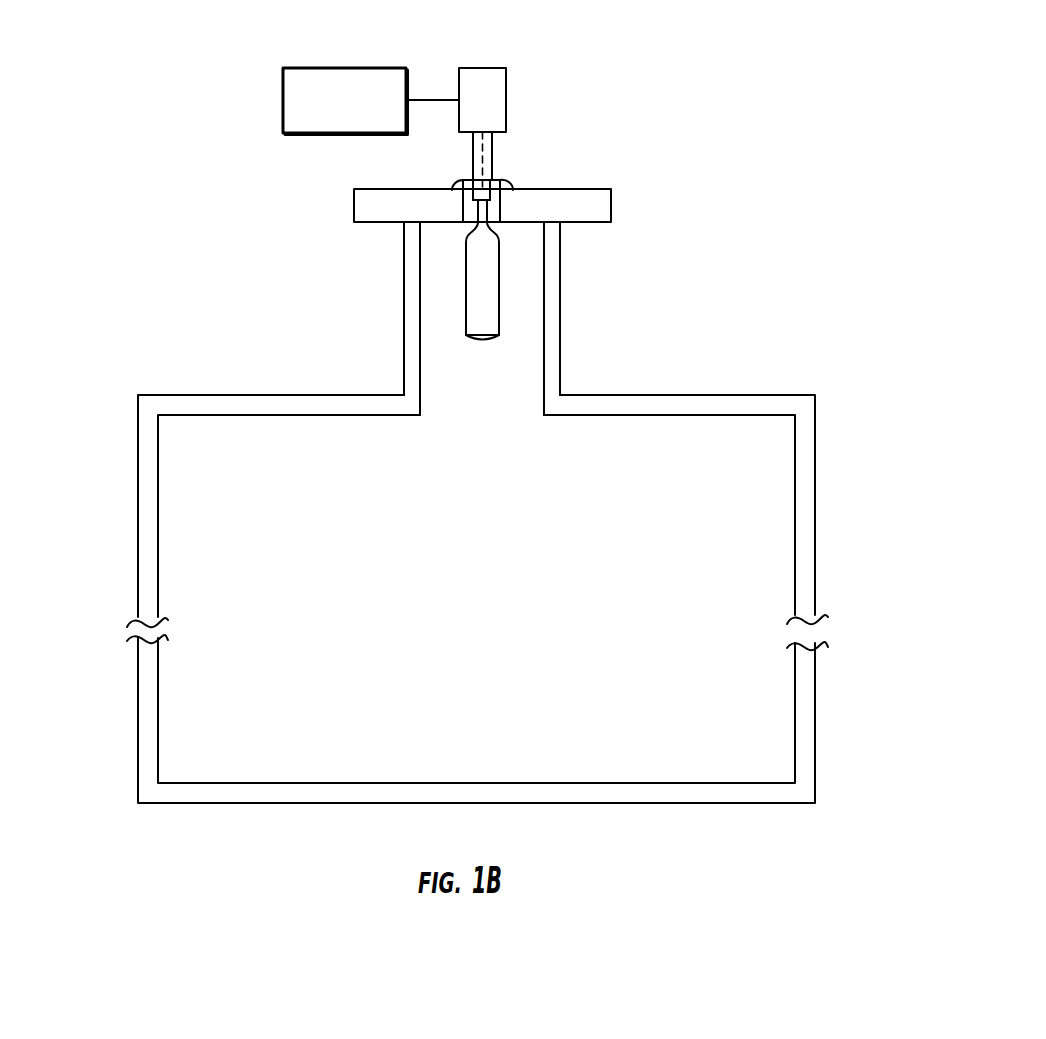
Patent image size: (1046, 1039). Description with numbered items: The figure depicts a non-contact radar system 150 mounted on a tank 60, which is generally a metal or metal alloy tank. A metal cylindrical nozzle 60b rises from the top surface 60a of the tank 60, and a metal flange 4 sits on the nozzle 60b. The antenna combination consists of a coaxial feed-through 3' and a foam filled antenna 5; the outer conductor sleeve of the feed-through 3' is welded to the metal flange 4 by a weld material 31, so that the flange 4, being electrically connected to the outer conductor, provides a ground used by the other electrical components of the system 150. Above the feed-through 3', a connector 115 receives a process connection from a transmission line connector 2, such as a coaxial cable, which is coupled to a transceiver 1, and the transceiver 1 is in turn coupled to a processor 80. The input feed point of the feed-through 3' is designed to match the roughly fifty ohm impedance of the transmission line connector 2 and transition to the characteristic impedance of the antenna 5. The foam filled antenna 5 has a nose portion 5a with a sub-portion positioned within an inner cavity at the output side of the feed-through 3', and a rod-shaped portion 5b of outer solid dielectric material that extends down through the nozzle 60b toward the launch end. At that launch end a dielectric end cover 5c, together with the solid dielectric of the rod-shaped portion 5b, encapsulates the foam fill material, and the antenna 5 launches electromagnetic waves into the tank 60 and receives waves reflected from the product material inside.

The non-contact radar system 150 is at (287, 43).
The processor 80 is at (283, 97).
The transceiver 1 is at (507, 80).
The connector 115 is at (489, 179).
The transmission line connector 2 is at (497, 181).
The coaxial feed-through 3' is at (614, 187).
The weld material 31 is at (456, 190).
The metal flange 4 is at (582, 207).
The foam filled antenna 5 is at (440, 332).
The nose portion 5a is at (480, 213).
The rod-shaped portion 5b is at (480, 269).
The dielectric end cover 5c is at (483, 336).
The nozzle 60b is at (410, 268).
The top surface 60a is at (663, 395).
The tank 60 is at (442, 573).